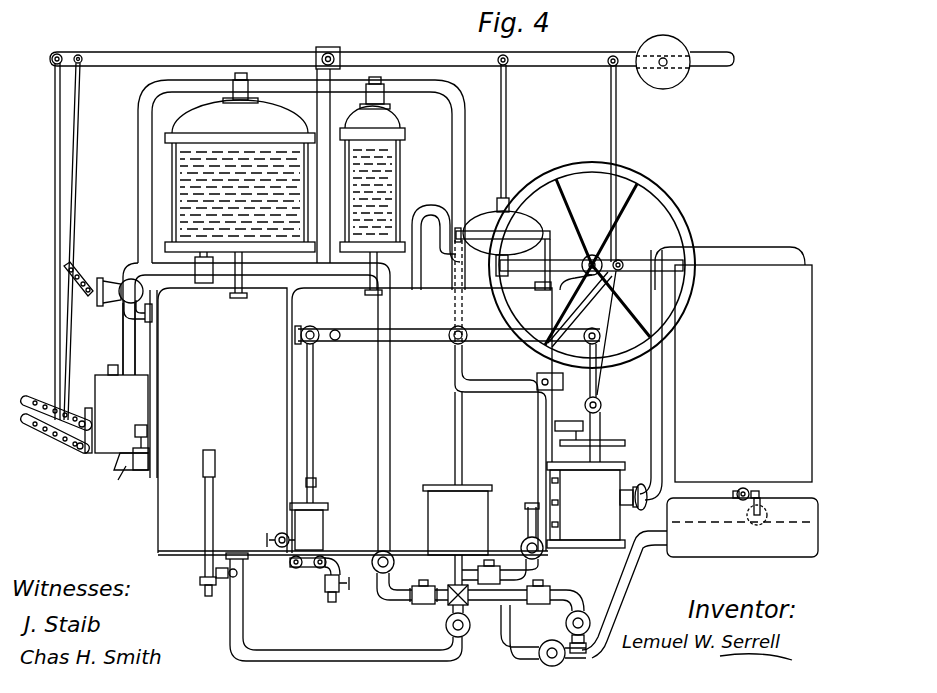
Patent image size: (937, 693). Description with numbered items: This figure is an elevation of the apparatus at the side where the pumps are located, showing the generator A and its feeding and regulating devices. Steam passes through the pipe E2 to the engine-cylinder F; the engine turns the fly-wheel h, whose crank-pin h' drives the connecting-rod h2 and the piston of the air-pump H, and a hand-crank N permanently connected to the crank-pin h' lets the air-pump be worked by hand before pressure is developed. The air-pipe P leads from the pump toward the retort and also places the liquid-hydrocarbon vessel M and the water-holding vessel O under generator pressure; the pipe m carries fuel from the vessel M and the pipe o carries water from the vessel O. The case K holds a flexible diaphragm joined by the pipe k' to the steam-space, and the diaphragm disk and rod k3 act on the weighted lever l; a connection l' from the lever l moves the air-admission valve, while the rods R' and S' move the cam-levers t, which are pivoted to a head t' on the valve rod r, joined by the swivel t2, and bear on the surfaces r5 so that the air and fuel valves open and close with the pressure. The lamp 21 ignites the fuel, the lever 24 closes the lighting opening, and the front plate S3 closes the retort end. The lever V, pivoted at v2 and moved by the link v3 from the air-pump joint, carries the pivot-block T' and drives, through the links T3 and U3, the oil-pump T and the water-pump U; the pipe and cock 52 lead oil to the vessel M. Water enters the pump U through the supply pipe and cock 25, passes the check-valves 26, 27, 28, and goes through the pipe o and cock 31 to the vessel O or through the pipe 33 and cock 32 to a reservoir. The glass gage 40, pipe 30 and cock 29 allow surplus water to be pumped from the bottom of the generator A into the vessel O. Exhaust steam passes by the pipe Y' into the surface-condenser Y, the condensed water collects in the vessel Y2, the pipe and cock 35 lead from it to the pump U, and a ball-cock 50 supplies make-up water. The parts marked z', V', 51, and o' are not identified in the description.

The lever l is at (392, 52).
The disk z' is at (663, 54).
The rod R' is at (48, 241).
The swivel t2 is at (30, 452).
The air-pipe P is at (298, 185).
The water-holding vessel O is at (240, 185).
The liquid hydrocarbon vessel M is at (382, 186).
The pipe k' is at (436, 238).
The diaphragm disk and rod k3 is at (512, 138).
The case K is at (502, 250).
The fly-wheel h is at (592, 265).
The crank N is at (593, 255).
The crank-pin h' is at (589, 258).
The connection l' is at (613, 235).
The connecting-rod h2 is at (612, 285).
The generator A is at (222, 420).
The pipe m is at (123, 355).
The pipe o is at (285, 401).
The lever V is at (447, 326).
The pivot-block T' is at (309, 326).
The pivot v2 is at (338, 330).
The valve V' is at (464, 327).
The link T3 is at (318, 423).
The oil-pump T is at (309, 526).
The pipe and cock 52 is at (275, 533).
The valve 51 is at (319, 579).
The glass gage 40 is at (211, 523).
The pipe 30 is at (344, 607).
The cock 29 is at (466, 621).
The check-valve 28 is at (423, 584).
The check-valve 26 is at (555, 590).
The water-supply pipe and cock 25 is at (568, 632).
The pipe and cock 35 is at (584, 592).
The cock 31 is at (392, 575).
The cock 32 is at (521, 558).
The pipe 33 is at (524, 520).
The check-valve 27 is at (488, 568).
The water-pump U is at (457, 520).
The link U3 is at (469, 488).
The air-pump H is at (597, 505).
The engine-cylinder F is at (615, 446).
The pipe E2 is at (578, 392).
The surface-condenser Y is at (743, 373).
The pipe Y' is at (719, 334).
The link v3 is at (650, 370).
The water-holding vessel Y2 is at (742, 527).
The supply-pipe and ball-cock 50 is at (760, 494).
The cock o' is at (124, 300).
The rod S' is at (78, 296).
The front plate S3 is at (148, 398).
The lever 24 is at (140, 425).
The lamp 21 is at (114, 478).
The cam-levers t is at (56, 414).
The head t' is at (65, 417).
The bearing-surfaces r5 is at (88, 410).
The rod r is at (84, 420).